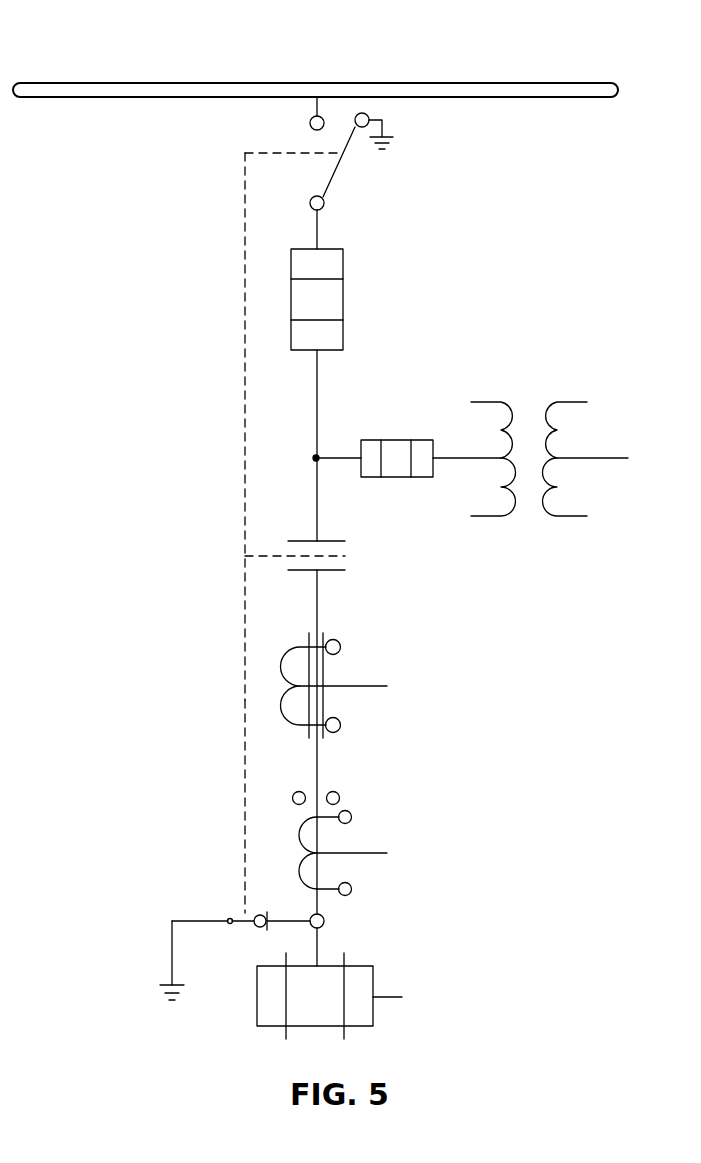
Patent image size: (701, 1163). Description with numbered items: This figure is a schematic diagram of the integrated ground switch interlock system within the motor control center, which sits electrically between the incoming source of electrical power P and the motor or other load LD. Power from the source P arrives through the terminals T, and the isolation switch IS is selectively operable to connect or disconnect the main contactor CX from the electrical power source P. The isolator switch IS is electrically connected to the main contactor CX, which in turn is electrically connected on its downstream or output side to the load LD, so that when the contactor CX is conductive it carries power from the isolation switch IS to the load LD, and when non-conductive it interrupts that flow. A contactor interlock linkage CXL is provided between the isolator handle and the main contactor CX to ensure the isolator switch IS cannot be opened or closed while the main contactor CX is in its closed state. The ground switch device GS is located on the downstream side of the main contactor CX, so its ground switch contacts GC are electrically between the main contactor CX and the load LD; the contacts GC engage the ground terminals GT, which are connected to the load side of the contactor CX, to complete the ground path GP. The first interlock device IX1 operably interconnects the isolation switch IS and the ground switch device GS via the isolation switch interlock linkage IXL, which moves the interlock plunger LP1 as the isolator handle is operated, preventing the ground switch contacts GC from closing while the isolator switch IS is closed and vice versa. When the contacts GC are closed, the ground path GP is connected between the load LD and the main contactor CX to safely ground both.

The electrical power source P is at (222, 84).
The terminals T is at (310, 123).
The isolation switch IS is at (398, 130).
The main contactor device CX is at (359, 553).
The contactor interlock linkage CXL is at (263, 556).
The isolation switch interlock linkage IXL is at (246, 612).
The first interlock device IX1 is at (245, 834).
The ground terminals GT is at (290, 918).
The ground switch device GS is at (323, 920).
The ground switch contacts GC is at (248, 927).
The interlock plunger LP1 is at (247, 917).
The ground path GP is at (172, 958).
The load LD is at (374, 1015).